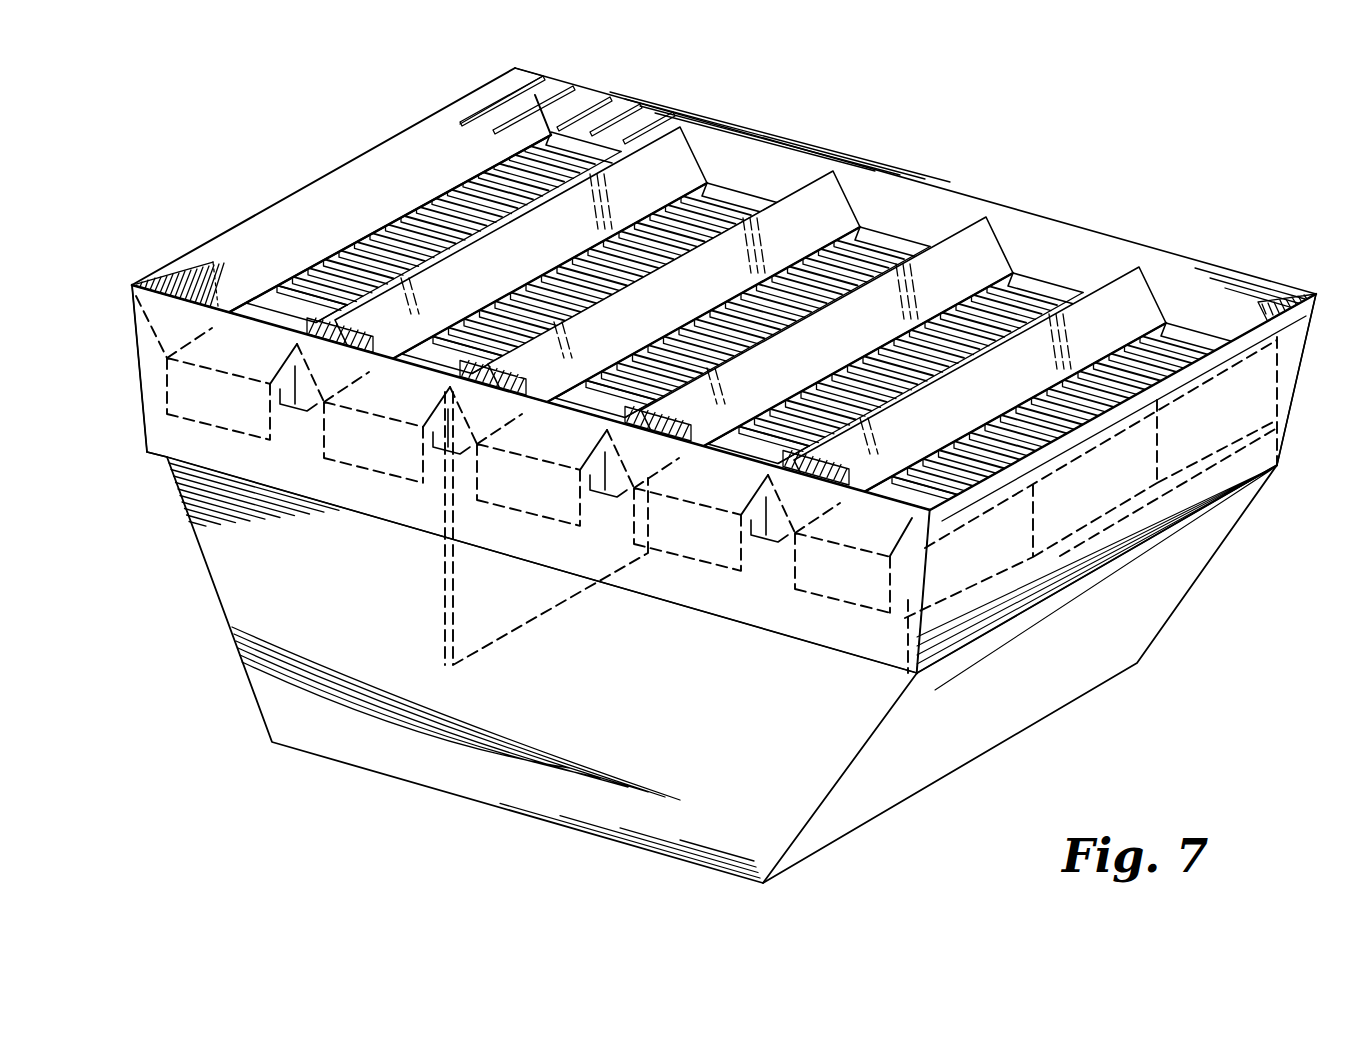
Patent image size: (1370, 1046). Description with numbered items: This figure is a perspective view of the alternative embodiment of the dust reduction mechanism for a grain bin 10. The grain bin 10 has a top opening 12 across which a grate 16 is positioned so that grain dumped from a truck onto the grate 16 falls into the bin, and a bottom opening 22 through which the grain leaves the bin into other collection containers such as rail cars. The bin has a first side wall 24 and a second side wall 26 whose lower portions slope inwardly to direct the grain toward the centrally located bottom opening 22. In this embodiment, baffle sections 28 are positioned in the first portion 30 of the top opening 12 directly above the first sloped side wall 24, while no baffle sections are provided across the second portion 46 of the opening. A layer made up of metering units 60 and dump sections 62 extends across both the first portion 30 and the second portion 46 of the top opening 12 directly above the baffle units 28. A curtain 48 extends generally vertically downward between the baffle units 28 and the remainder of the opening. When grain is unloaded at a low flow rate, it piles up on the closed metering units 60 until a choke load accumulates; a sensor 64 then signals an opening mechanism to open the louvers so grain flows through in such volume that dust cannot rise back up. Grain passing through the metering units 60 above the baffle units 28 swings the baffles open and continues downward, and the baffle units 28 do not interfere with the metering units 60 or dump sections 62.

The grain bin 10 is at (724, 606).
The top opening 12 is at (985, 168).
The grate 16 is at (590, 100).
The bottom opening 22 is at (736, 882).
The first side wall 24 is at (972, 740).
The second side wall 26 is at (244, 681).
The baffle units 28 is at (652, 584).
The first portion 30 is at (1120, 182).
The second portion 46 is at (690, 106).
The curtain 48 is at (445, 605).
The metering units 60 is at (1062, 512).
The dump sections 62 is at (1198, 436).
The sensor 64 is at (337, 224).